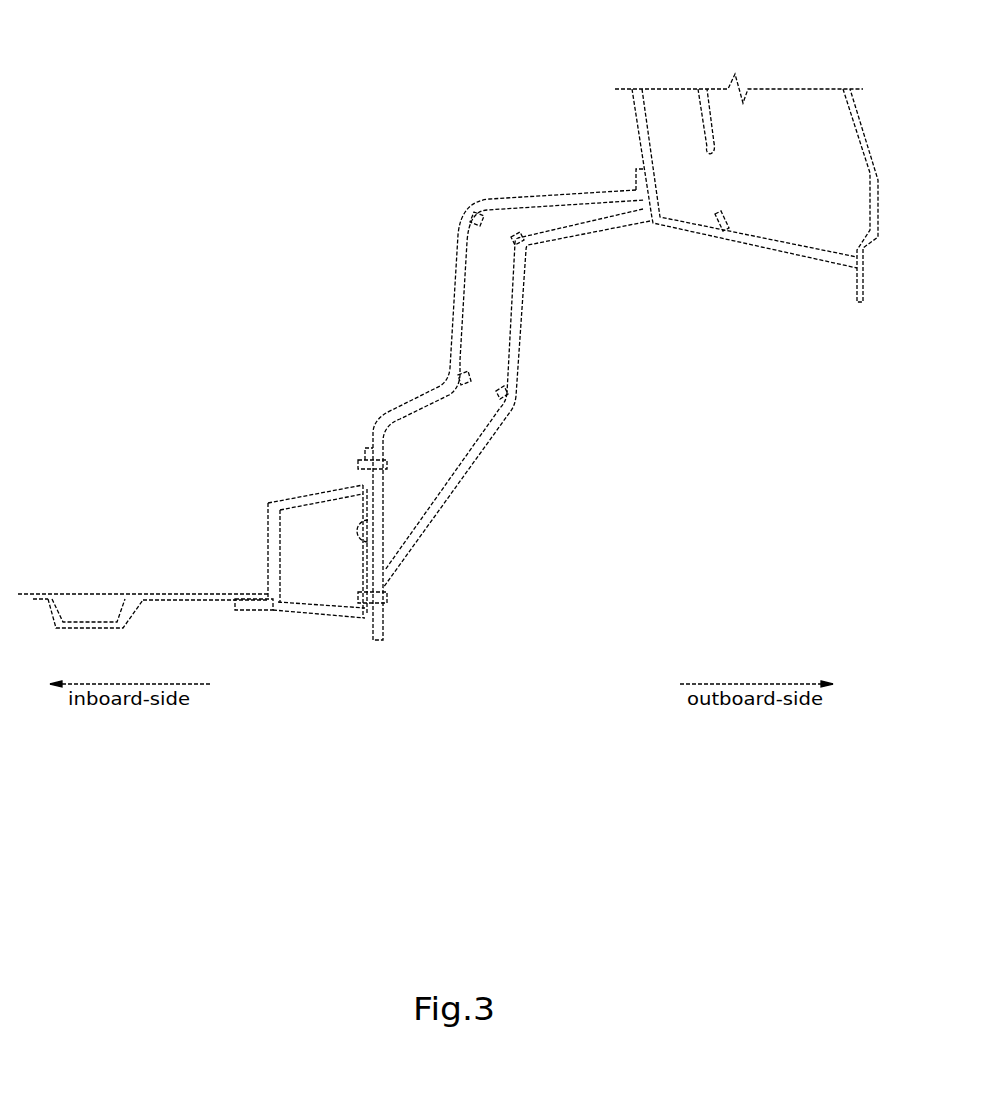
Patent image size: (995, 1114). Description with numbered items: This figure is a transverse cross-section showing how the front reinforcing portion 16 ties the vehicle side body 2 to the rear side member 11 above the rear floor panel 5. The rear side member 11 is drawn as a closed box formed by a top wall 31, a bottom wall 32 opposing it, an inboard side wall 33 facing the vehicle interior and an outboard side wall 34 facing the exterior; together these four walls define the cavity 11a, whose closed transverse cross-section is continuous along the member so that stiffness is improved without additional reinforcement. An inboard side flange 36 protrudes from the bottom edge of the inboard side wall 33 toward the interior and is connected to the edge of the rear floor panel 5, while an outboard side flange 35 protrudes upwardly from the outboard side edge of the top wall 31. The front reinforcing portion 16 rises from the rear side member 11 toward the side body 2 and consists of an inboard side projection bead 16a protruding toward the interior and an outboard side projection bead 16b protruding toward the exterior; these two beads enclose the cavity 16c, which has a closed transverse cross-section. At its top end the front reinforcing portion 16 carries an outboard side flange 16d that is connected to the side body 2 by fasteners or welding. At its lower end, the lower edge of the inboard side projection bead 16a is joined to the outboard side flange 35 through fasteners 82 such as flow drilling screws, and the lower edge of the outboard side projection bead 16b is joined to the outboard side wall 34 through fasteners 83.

The side body 2 is at (858, 125).
The rear floor panel 5 is at (88, 594).
The rear side member 11 is at (327, 530).
The cavity 11a is at (338, 568).
The front reinforcing portion 16 is at (497, 395).
The inboard side projection bead 16a is at (453, 290).
The outboard side projection bead 16b is at (463, 478).
The cavity 16c is at (504, 322).
The outboard side flange 16d is at (636, 178).
The top wall 31 is at (298, 496).
The bottom wall 32 is at (318, 620).
The inboard side wall 33 is at (268, 530).
The outboard side wall 34 is at (369, 524).
The outboard side flange 35 is at (365, 458).
The inboard side flange 36 is at (251, 612).
The fasteners 82 is at (358, 465).
The fasteners 83 is at (388, 598).